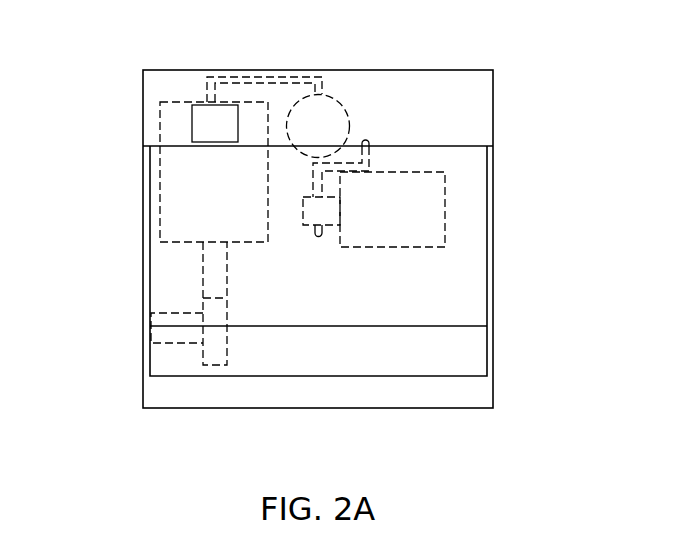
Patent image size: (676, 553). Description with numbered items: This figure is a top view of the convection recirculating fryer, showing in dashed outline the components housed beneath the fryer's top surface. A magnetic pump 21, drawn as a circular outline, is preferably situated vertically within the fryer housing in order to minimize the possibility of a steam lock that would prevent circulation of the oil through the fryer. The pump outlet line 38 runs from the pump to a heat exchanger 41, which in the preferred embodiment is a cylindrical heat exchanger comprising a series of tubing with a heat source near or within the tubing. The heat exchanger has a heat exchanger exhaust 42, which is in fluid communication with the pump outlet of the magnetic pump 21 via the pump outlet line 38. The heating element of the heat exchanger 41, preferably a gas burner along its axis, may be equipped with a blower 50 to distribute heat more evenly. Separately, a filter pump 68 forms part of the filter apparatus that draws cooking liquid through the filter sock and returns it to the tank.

The magnetic pump 21 is at (352, 86).
The pump outlet line 38 is at (259, 56).
The heat exchanger 41 is at (153, 136).
The heat exchanger exhaust 42 is at (127, 168).
The blower 50 is at (110, 353).
The filter pump 68 is at (392, 318).